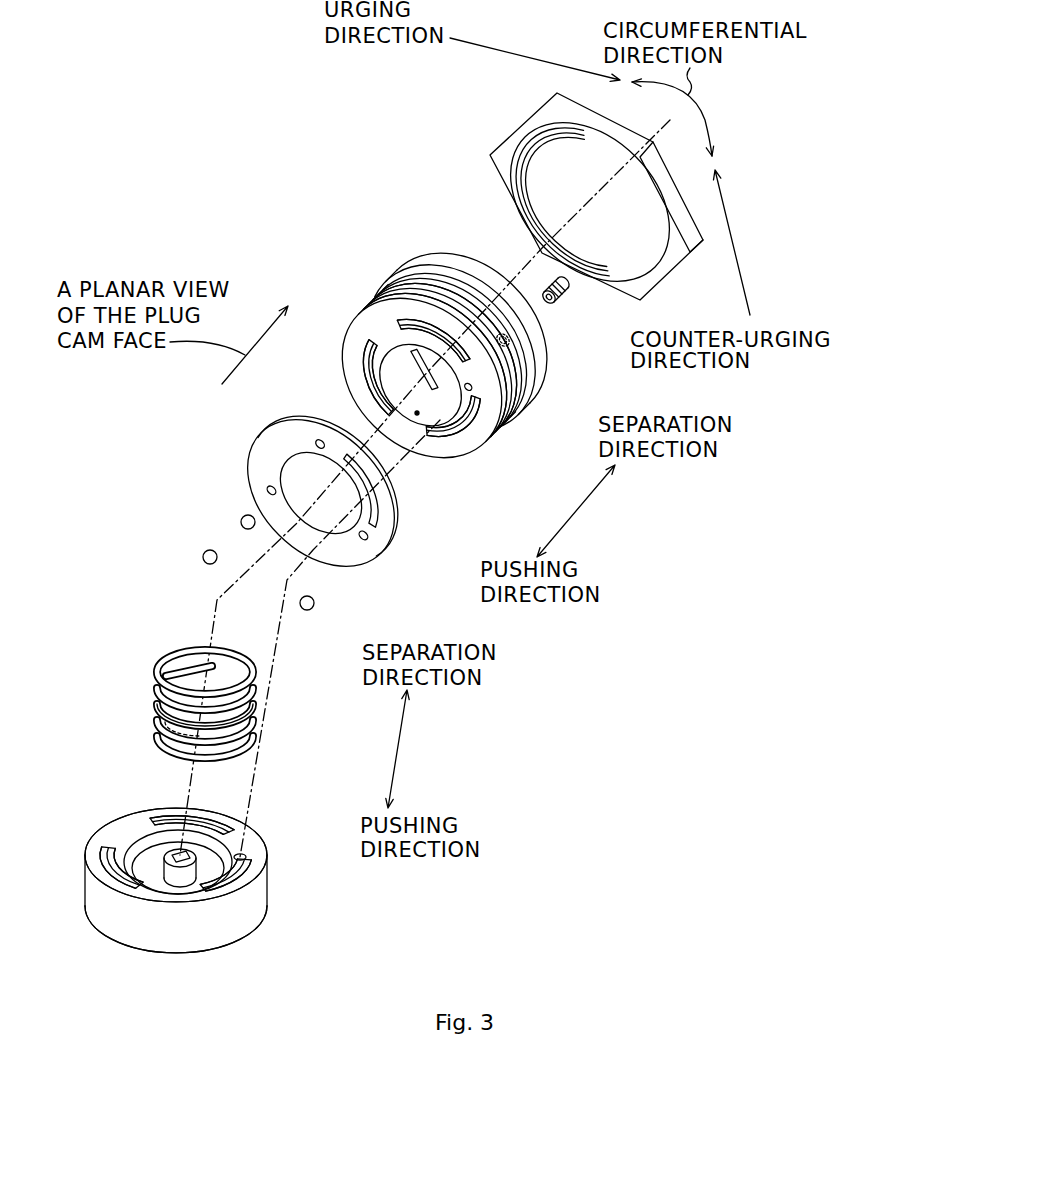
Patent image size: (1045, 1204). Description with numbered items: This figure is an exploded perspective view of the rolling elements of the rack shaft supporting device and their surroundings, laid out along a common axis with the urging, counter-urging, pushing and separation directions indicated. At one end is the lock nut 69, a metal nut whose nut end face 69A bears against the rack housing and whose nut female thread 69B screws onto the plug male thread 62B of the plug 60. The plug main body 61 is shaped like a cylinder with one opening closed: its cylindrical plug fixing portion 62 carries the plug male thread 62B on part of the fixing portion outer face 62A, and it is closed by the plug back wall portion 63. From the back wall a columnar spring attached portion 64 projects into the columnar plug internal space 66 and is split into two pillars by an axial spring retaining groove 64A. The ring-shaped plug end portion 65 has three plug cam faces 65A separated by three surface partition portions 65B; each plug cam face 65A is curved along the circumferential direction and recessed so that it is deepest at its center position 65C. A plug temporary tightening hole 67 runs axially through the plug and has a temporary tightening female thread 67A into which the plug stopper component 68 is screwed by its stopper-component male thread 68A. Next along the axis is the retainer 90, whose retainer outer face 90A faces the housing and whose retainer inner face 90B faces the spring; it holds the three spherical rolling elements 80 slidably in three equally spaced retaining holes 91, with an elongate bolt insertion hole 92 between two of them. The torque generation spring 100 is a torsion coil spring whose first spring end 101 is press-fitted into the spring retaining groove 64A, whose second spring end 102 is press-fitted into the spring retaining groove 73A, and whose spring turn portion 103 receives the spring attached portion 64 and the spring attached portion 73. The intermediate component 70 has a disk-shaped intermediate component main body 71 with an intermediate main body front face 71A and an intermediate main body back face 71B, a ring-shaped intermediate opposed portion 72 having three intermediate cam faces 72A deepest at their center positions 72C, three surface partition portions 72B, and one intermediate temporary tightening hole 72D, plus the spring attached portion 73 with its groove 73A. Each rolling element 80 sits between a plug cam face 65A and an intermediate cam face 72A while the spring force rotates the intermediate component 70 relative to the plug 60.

The plug 60 is at (295, 273).
The plug main body 61 is at (545, 380).
The plug fixing portion 62 is at (535, 405).
The fixing portion outer face 62A is at (373, 295).
The plug male thread 62B is at (402, 290).
The plug back wall portion 63 is at (487, 282).
The spring attached portion 64 is at (415, 368).
The spring retaining groove 64A is at (433, 412).
The plug end portion 65 is at (500, 433).
The plug cam face 65A is at (360, 325).
The surface partition portion 65B is at (365, 340).
The center position 65C is at (425, 325).
The plug internal space 66 is at (435, 405).
The plug temporary tightening hole 67 is at (475, 386).
The temporary tightening female thread 67A is at (515, 340).
The plug stopper component 68 is at (532, 291).
The stopper-component male thread 68A is at (570, 300).
The lock nut 69 is at (660, 280).
The nut end face 69A is at (530, 120).
The nut female thread 69B is at (530, 180).
The intermediate component 70 is at (318, 900).
The intermediate component main body 71 is at (228, 833).
The intermediate main body front face 71A is at (184, 953).
The intermediate main body back face 71B is at (153, 847).
The intermediate opposed portion 72 is at (106, 818).
The intermediate cam face 72A is at (166, 818).
The surface partition portion 72B is at (115, 848).
The center position 72C is at (196, 822).
The intermediate temporary tightening hole 72D is at (246, 855).
The spring attached portion 73 is at (162, 866).
The spring retaining groove 73A is at (186, 863).
The rolling element 80 is at (240, 522).
The retainer 90 is at (229, 433).
The retainer outer face 90A is at (282, 428).
The retainer inner face 90B is at (345, 492).
The retaining hole 91 is at (265, 491).
The bolt insertion hole 92 is at (386, 521).
The torque generation spring 100 is at (131, 656).
The first spring end 101 is at (184, 650).
The second spring end 102 is at (160, 725).
The spring turn portion 103 is at (160, 691).